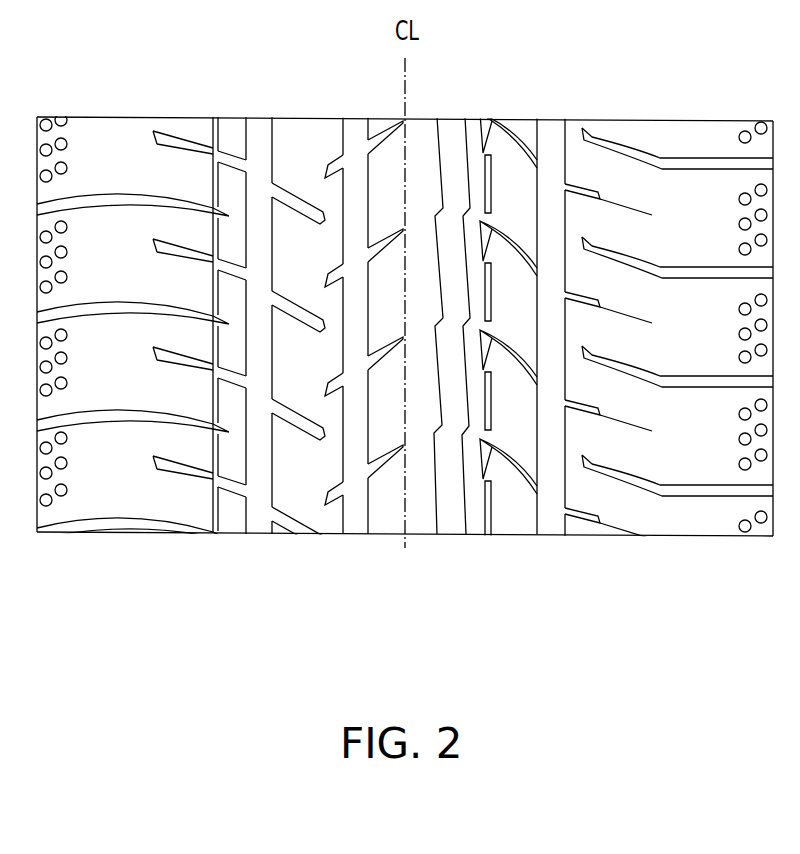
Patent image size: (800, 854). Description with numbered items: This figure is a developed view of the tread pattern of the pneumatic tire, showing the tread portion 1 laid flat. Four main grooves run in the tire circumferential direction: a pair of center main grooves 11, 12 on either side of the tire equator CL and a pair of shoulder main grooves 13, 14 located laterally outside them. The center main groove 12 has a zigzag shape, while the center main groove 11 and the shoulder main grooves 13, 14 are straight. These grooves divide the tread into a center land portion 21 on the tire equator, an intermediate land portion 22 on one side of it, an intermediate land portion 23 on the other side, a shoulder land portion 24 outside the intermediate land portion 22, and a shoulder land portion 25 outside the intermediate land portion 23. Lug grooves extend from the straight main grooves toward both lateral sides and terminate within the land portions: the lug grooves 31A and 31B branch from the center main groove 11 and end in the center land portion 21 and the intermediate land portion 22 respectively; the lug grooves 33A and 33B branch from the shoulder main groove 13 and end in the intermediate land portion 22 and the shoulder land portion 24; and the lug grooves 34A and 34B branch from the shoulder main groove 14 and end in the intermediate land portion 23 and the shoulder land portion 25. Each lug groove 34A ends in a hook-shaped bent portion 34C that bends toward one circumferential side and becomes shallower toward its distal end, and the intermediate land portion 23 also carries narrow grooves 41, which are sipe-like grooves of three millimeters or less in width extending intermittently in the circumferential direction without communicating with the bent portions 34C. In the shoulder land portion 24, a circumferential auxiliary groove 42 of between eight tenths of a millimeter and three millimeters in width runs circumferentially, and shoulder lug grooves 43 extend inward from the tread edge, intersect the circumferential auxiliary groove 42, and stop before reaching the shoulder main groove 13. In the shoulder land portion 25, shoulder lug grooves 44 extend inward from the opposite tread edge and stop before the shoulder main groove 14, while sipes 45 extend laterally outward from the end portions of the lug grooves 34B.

The tread portion 1 is at (608, 122).
The center main groove 11 is at (357, 128).
The center main groove 12 is at (453, 128).
The shoulder main groove 13 is at (263, 128).
The shoulder main groove 14 is at (552, 128).
The center land portion 21 is at (425, 128).
The intermediate land portion 22 is at (307, 128).
The intermediate land portion 23 is at (515, 128).
The shoulder land portion 24 is at (142, 127).
The shoulder land portion 25 is at (669, 130).
The lug groove 31A is at (378, 463).
The lug groove 31B is at (327, 493).
The lug groove 33A is at (275, 518).
The lug groove 33B is at (185, 472).
The lug groove 34A is at (533, 485).
The lug groove 34B is at (585, 517).
The bent portion 34C is at (488, 448).
The narrow groove 41 is at (493, 505).
The circumferential auxiliary groove 42 is at (217, 510).
The shoulder lug groove 43 is at (123, 520).
The shoulder lug groove 44 is at (693, 488).
The sipe 45 is at (652, 428).